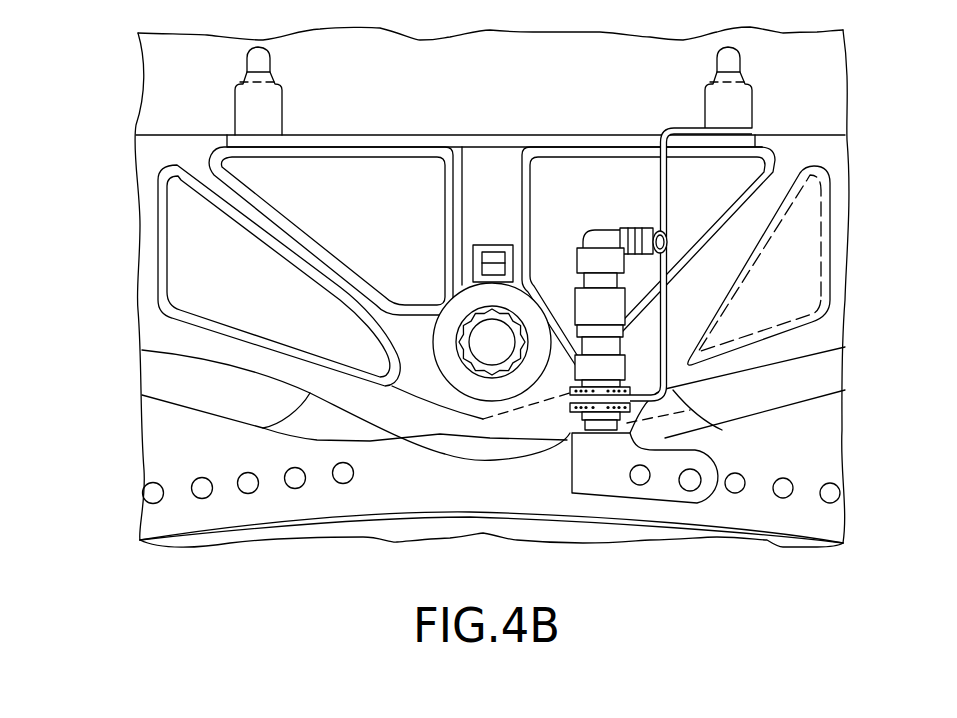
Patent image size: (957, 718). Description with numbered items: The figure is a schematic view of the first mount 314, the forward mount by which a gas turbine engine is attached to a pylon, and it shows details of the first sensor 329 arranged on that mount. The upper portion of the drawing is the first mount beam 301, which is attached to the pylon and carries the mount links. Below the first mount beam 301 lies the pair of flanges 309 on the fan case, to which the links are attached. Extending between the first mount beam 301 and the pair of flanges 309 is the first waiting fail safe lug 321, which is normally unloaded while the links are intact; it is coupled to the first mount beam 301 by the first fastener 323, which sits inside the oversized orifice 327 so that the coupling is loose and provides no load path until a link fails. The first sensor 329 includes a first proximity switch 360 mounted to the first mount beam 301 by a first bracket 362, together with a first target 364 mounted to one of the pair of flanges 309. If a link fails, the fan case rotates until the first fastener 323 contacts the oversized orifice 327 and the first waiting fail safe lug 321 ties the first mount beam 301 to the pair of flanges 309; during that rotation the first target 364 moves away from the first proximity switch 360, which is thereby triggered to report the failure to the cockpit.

The first mount 314 is at (95, 106).
The first mount beam 301 is at (490, 157).
The first bracket 362 is at (658, 190).
The first proximity switch 360 is at (580, 300).
The first fastener 323 is at (424, 317).
The oversized orifice 327 is at (453, 338).
The first sensor 329 is at (706, 304).
The pair of flanges 309 is at (363, 480).
The first waiting fail safe lug 321 is at (372, 422).
The first target 364 is at (600, 465).